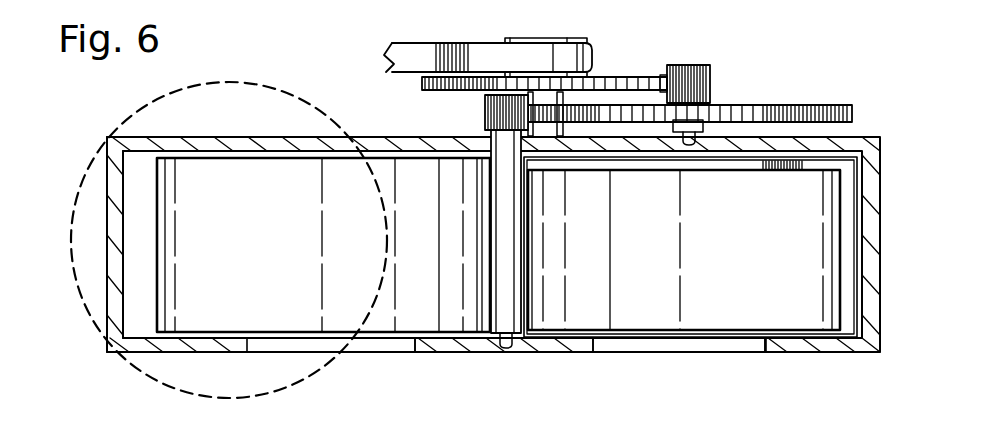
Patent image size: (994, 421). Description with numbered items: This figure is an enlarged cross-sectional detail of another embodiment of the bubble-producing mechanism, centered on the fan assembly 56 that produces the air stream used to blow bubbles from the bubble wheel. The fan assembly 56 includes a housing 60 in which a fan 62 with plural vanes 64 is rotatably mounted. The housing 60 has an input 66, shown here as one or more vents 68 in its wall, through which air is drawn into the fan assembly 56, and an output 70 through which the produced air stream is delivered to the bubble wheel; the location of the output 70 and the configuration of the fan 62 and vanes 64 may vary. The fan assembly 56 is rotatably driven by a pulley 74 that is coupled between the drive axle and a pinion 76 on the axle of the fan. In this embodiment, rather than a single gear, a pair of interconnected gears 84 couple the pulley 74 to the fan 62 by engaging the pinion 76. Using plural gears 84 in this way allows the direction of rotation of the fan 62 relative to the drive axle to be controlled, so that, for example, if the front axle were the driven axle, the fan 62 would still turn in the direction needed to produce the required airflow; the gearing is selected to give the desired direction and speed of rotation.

The fan assembly 56 is at (626, 181).
The housing 60 is at (884, 340).
The fan 62 is at (103, 267).
The vanes 64 is at (262, 261).
The input 66 is at (606, 364).
The vents 68 is at (413, 351).
The output 70 is at (237, 82).
The pulley 74 is at (427, 44).
The pinion 76 is at (485, 113).
The interconnected gears 84 is at (618, 76).